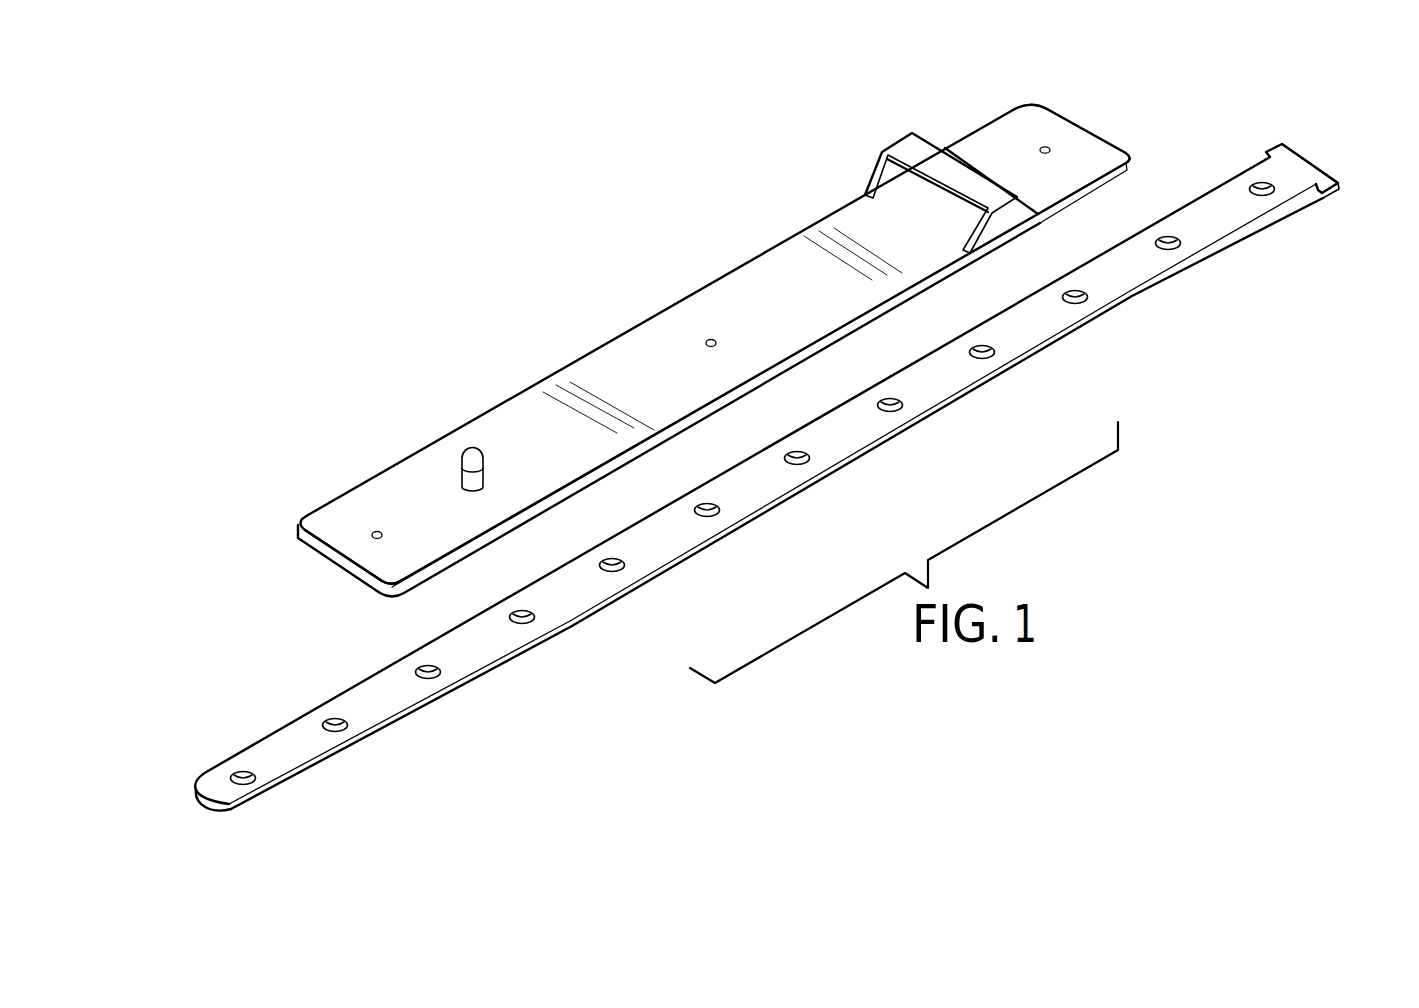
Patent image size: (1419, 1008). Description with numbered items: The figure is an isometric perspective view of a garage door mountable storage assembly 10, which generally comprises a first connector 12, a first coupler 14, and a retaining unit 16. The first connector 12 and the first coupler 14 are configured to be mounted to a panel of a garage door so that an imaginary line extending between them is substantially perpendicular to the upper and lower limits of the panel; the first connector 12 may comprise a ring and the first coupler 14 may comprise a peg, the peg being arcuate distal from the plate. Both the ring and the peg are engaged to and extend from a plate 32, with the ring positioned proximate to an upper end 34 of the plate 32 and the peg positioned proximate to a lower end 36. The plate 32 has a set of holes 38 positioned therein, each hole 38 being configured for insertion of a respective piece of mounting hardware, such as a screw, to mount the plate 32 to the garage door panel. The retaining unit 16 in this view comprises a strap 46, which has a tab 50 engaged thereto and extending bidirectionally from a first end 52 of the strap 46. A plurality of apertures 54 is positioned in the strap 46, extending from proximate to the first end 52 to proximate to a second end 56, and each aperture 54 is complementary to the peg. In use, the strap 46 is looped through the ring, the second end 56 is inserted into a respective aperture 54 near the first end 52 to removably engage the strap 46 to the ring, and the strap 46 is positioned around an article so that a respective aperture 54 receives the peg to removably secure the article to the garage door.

The garage door mountable storage assembly 10 is at (427, 173).
The first connector 12 is at (927, 136).
The first coupler 14 is at (466, 444).
The retaining unit 16 is at (950, 398).
The plate 32 is at (748, 258).
The upper end 34 is at (1093, 122).
The lower end 36 is at (333, 568).
The hole 38 is at (700, 338).
The strap 46 is at (570, 623).
The tab 50 is at (1332, 160).
The first end 52 is at (1292, 172).
The aperture 54 is at (352, 725).
The second end 56 is at (198, 803).